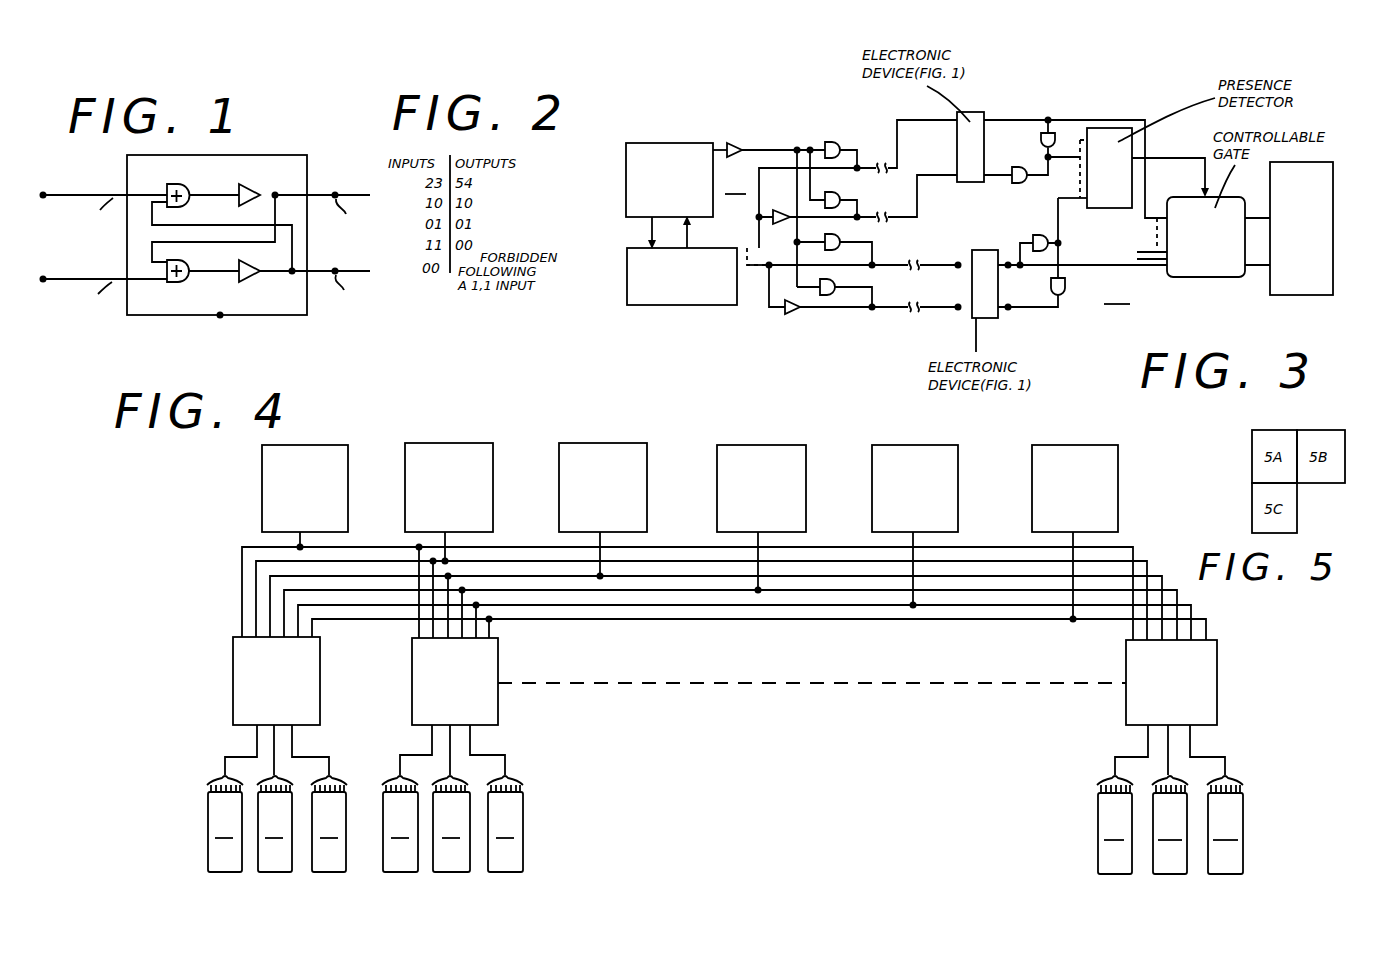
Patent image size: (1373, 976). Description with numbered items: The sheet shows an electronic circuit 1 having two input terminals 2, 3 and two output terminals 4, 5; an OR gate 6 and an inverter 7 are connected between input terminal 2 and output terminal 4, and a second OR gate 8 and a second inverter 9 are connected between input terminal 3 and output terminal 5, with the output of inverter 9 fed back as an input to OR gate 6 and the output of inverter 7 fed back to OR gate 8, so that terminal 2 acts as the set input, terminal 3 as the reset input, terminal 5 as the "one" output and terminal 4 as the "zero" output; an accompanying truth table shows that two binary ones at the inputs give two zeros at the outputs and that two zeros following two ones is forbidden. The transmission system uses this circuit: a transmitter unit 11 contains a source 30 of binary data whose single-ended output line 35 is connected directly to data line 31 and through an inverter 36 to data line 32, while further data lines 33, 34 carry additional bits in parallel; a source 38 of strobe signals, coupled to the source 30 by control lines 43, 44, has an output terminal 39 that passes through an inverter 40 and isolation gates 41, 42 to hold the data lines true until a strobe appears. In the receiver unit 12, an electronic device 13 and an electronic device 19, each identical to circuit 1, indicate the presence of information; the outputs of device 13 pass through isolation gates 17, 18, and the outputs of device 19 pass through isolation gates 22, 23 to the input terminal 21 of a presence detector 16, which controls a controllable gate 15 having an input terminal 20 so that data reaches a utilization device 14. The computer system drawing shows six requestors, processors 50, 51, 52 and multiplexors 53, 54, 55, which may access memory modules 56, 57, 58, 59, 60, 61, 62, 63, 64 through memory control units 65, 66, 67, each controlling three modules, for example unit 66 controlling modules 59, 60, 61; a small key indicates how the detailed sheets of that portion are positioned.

In FIG. 1, the electronic circuit 1 is at (222, 318).
In FIG. 1, the input terminal 2 is at (50, 194).
In FIG. 1, the input terminal 3 is at (45, 283).
In FIG. 1, the output terminal 4 is at (337, 192).
In FIG. 1, the output terminal 5 is at (337, 268).
In FIG. 1, the OR gate 6 is at (185, 184).
In FIG. 1, the inverter 7 is at (252, 183).
In FIG. 1, the second OR gate 8 is at (183, 283).
In FIG. 1, the second inverter 9 is at (250, 283).
In FIG. 3, the transmitter unit 11 is at (738, 183).
In FIG. 3, the receiver unit 12 is at (1117, 293).
In FIG. 3, the electronic device 13 is at (990, 318).
In FIG. 3, the utilization device 14 is at (1318, 295).
In FIG. 3, the controllable gate 15 is at (1210, 277).
In FIG. 3, the presence detector 16 is at (1145, 130).
In FIG. 3, the isolation gate 17 is at (1066, 288).
In FIG. 3, the isolation gate 18 is at (1033, 238).
In FIG. 3, the electronic device 19 is at (975, 112).
In FIG. 3, the input terminal 20 is at (1147, 238).
In FIG. 3, the input terminal 21 is at (1100, 128).
In FIG. 3, the isolation gate 22 is at (1052, 132).
In FIG. 3, the isolation gate 23 is at (1022, 184).
In FIG. 3, the source 30 is at (676, 305).
In FIG. 3, the data line 31 is at (893, 268).
In FIG. 3, the data line 32 is at (893, 310).
In FIG. 3, the data line 33 is at (897, 130).
In FIG. 3, the data line 34 is at (920, 200).
In FIG. 3, the output line 35 is at (756, 270).
In FIG. 3, the inverter 36 is at (796, 316).
In FIG. 3, the source of strobe signals 38 is at (678, 143).
In FIG. 3, the output terminal 39 is at (720, 148).
In FIG. 3, the inverter 40 is at (742, 146).
In FIG. 3, the isolation gate 41 is at (842, 236).
In FIG. 3, the isolation gate 42 is at (834, 298).
In FIG. 3, the control line 43 is at (648, 234).
In FIG. 3, the control line 44 is at (690, 234).
In FIG. 4, the processor 50 is at (304, 445).
In FIG. 4, the processor 51 is at (450, 443).
In FIG. 4, the processor 52 is at (604, 443).
In FIG. 4, the multiplexor 53 is at (762, 445).
In FIG. 4, the multiplexor 54 is at (916, 445).
In FIG. 4, the multiplexor 55 is at (1076, 445).
In FIG. 4, the memory module 56 is at (218, 872).
In FIG. 4, the memory module 57 is at (270, 872).
In FIG. 4, the memory module 58 is at (330, 872).
In FIG. 4, the memory module 59 is at (398, 872).
In FIG. 4, the memory module 60 is at (455, 872).
In FIG. 4, the memory module 61 is at (514, 872).
In FIG. 4, the memory module 62 is at (1112, 874).
In FIG. 4, the memory module 63 is at (1168, 874).
In FIG. 4, the memory module 64 is at (1226, 874).
In FIG. 4, the memory control unit 65 is at (233, 655).
In FIG. 4, the memory control unit 66 is at (498, 705).
In FIG. 4, the memory control unit 67 is at (1126, 705).